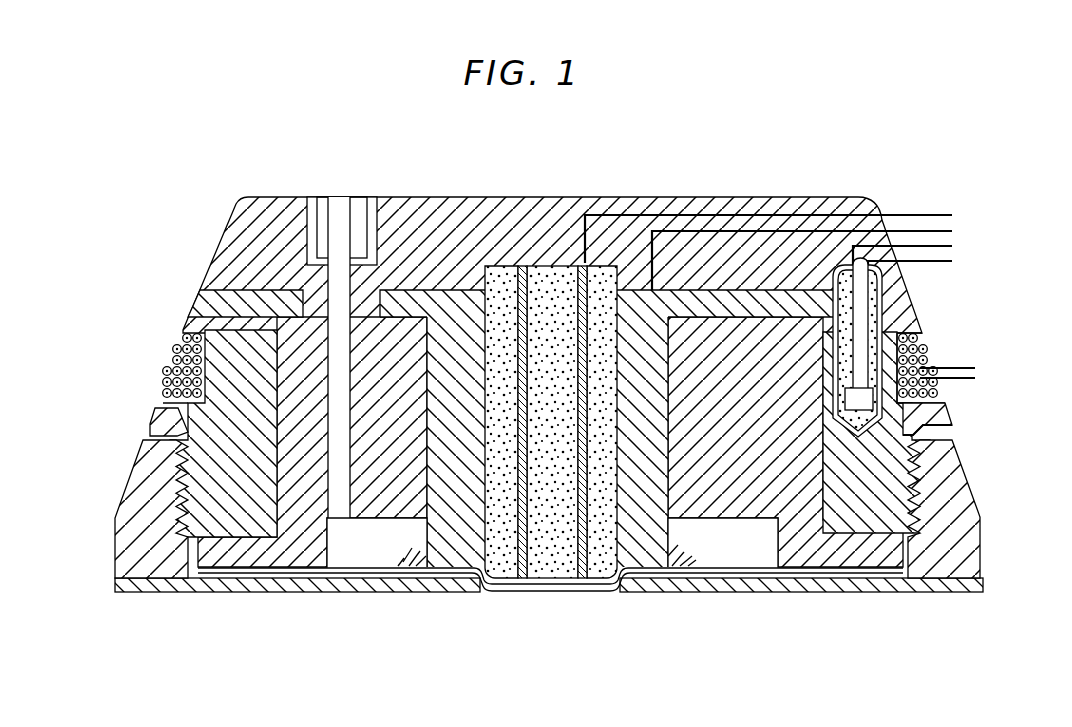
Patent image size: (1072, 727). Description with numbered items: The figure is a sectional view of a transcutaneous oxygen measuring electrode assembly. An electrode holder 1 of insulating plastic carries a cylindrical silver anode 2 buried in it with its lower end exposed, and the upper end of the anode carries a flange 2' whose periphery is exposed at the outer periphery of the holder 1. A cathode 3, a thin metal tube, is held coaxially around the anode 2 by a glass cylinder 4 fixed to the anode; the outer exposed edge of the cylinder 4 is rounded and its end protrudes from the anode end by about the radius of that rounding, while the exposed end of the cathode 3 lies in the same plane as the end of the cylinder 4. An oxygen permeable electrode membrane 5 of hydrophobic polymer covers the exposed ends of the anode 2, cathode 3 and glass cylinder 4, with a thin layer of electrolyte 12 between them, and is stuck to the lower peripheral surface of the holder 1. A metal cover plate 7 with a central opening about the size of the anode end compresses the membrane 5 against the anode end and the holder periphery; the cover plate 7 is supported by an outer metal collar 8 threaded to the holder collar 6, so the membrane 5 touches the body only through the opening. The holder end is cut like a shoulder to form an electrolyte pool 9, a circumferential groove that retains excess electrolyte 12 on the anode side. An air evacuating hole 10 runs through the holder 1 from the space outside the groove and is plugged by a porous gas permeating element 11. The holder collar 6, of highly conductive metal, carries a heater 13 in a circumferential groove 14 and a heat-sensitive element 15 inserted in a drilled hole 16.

The electrode holder 1 is at (778, 358).
The silver anode 2 is at (547, 346).
The flange 2' is at (514, 221).
The cathode 3 is at (500, 285).
The glass cylinder 4 is at (490, 290).
The electrode membrane 5 is at (735, 574).
The holder collar 6 is at (950, 421).
The cover plate 7 is at (800, 579).
The outer metal collar 8 is at (942, 540).
The electrolyte pool 9 is at (368, 522).
The air evacuating hole 10 is at (338, 522).
The gas permeating element 11 is at (342, 195).
The electrolyte 12 is at (505, 575).
The heater 13 is at (925, 348).
The circumferential groove 14 is at (950, 410).
The heat-sensitive element 15 is at (878, 302).
The hole 16 is at (896, 328).